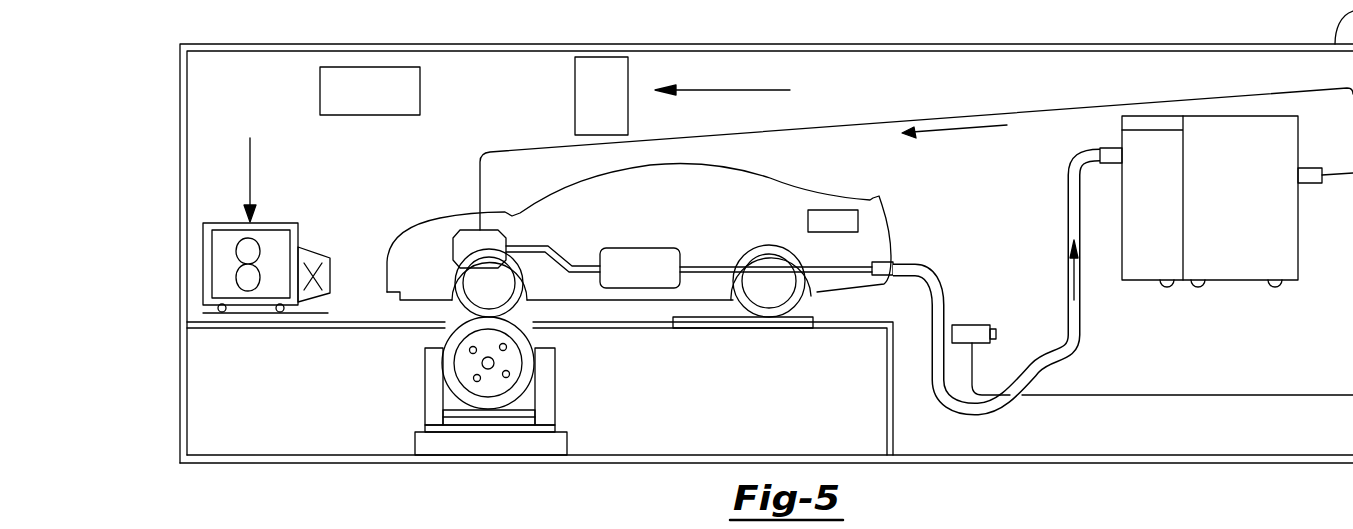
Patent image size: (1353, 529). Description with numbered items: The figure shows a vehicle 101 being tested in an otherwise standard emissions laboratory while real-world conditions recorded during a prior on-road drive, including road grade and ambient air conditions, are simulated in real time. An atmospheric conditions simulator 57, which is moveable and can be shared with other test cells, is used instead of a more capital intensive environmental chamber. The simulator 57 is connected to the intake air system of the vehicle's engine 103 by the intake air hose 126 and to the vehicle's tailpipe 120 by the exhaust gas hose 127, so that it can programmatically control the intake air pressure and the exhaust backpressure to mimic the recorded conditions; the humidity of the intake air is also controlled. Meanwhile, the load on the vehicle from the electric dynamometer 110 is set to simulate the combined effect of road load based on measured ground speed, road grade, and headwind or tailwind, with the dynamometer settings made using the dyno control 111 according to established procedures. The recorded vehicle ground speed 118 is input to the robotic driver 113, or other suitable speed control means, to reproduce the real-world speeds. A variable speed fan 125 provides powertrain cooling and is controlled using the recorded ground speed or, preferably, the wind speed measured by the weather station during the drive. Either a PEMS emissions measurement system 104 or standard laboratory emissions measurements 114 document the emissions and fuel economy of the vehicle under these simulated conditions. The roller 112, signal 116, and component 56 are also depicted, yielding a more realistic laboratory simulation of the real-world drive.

The vehicle 101 is at (763, 177).
The engine 103 is at (463, 245).
The PEMS emissions measurement system 104 is at (858, 222).
The electric dynamometer 110 is at (535, 413).
The dyno control 111 is at (367, 67).
The dynamometer roller 112 is at (450, 337).
The robotic driver 113 is at (600, 57).
The standard laboratory emissions measurements 114 is at (1198, 395).
The speed signal 116 is at (250, 185).
The vehicle ground speed 118 is at (780, 88).
The tailpipe 120 is at (893, 265).
The variable speed fan 125 is at (222, 272).
The intake air hose 126 is at (1047, 108).
The exhaust gas hose 127 is at (1081, 338).
The exhaust component 56 is at (640, 248).
The atmospheric conditions simulator 57 is at (1298, 250).